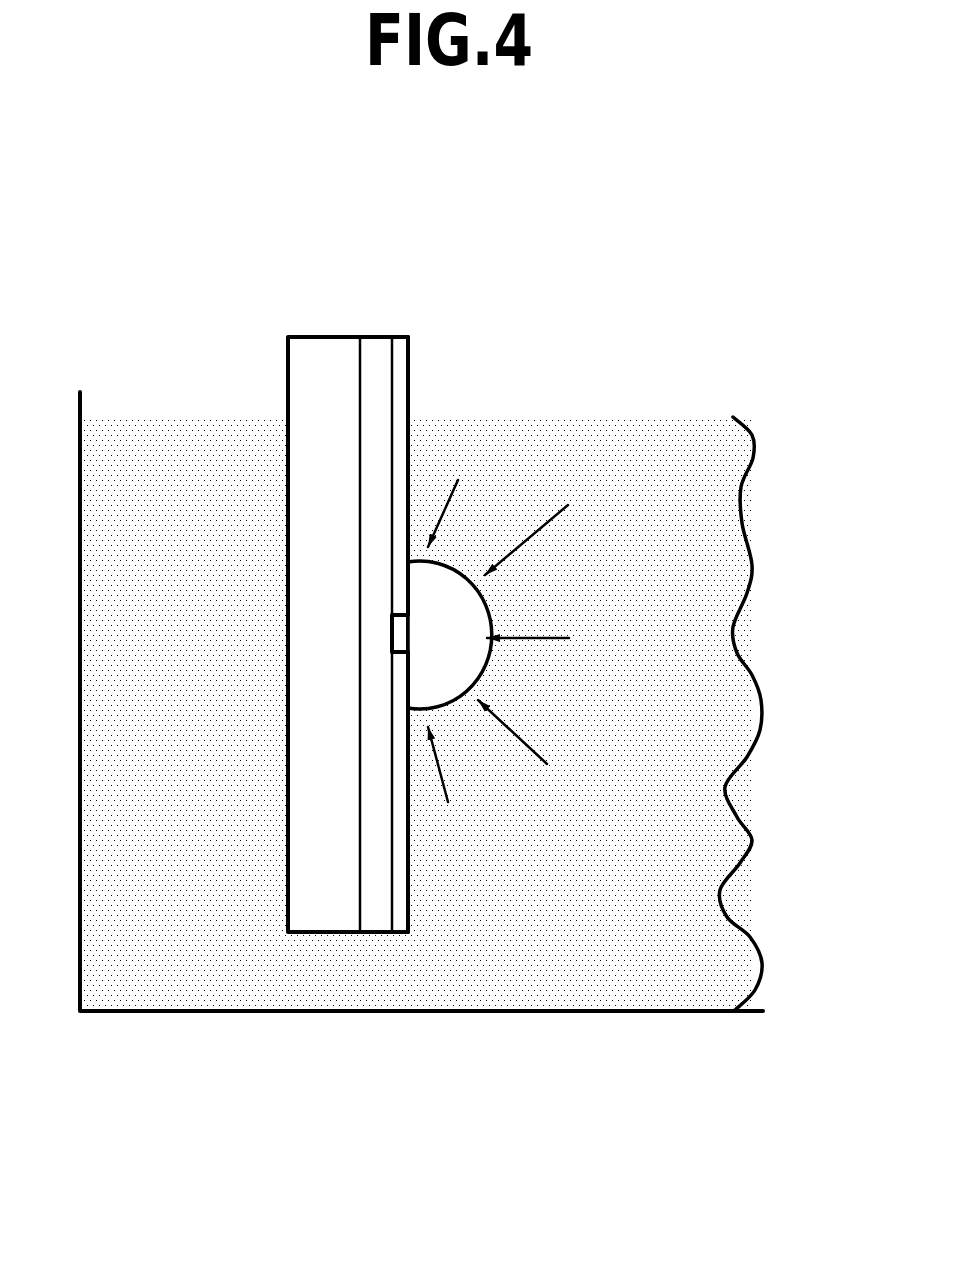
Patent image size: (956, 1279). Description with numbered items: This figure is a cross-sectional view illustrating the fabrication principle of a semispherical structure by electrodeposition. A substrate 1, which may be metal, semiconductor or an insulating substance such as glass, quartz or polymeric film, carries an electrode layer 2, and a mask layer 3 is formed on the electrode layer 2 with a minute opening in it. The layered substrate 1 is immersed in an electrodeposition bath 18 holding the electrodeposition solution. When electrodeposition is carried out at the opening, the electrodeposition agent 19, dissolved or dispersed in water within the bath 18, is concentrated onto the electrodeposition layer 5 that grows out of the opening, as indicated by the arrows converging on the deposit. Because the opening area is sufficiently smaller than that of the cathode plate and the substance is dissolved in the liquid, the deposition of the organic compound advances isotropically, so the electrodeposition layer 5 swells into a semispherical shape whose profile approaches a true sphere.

The substrate 1 is at (321, 337).
The electrode layer 2 is at (376, 933).
The mask layer 3 is at (403, 928).
The electrodeposition layer 5 is at (437, 640).
The electrodeposition bath 18 is at (610, 495).
The electrodeposition agent 19 is at (545, 641).